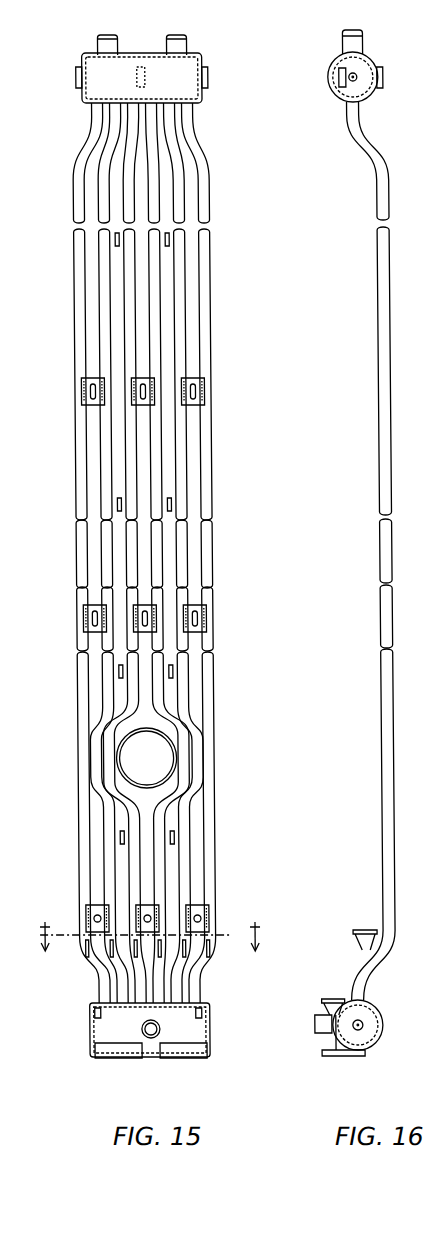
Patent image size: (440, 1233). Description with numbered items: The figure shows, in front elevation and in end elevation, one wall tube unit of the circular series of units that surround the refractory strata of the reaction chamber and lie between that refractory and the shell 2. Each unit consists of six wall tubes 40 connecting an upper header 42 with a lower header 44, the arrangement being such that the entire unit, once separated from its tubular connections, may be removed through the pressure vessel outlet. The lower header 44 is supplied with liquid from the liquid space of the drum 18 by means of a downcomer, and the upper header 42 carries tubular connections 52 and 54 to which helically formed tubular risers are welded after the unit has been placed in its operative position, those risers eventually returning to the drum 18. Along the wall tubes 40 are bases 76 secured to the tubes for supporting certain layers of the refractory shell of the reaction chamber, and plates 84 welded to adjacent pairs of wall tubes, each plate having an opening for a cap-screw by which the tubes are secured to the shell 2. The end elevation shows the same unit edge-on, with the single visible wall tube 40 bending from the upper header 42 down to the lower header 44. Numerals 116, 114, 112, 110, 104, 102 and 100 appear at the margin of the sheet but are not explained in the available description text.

In FIG. 15, the wall tube 40 is at (80, 341).
In FIG. 16, the wall tube 40 is at (388, 291).
In FIG. 15, the upper header 42 is at (202, 100).
In FIG. 16, the upper header 42 is at (377, 62).
In FIG. 15, the lower header 44 is at (202, 1026).
In FIG. 16, the lower header 44 is at (376, 1021).
In FIG. 15, the tubular connection 52 is at (98, 40).
In FIG. 15, the tubular connection 54 is at (186, 43).
In FIG. 16, the tubular connection 54 is at (363, 43).
In FIG. 15, the base 76 is at (203, 949).
In FIG. 15, the plate 84 is at (194, 385).
In FIG. 15, the drum 18 is at (158, 952).
In FIG. 16, the element 116 is at (432, 673).
In FIG. 16, the element 114 is at (428, 695).
In FIG. 16, the shell 2 is at (439, 719).
In FIG. 16, the element 112 is at (427, 741).
In FIG. 16, the element 110 is at (428, 764).
In FIG. 16, the element 104 is at (426, 795).
In FIG. 16, the element 102 is at (430, 826).
In FIG. 16, the element 100 is at (432, 873).